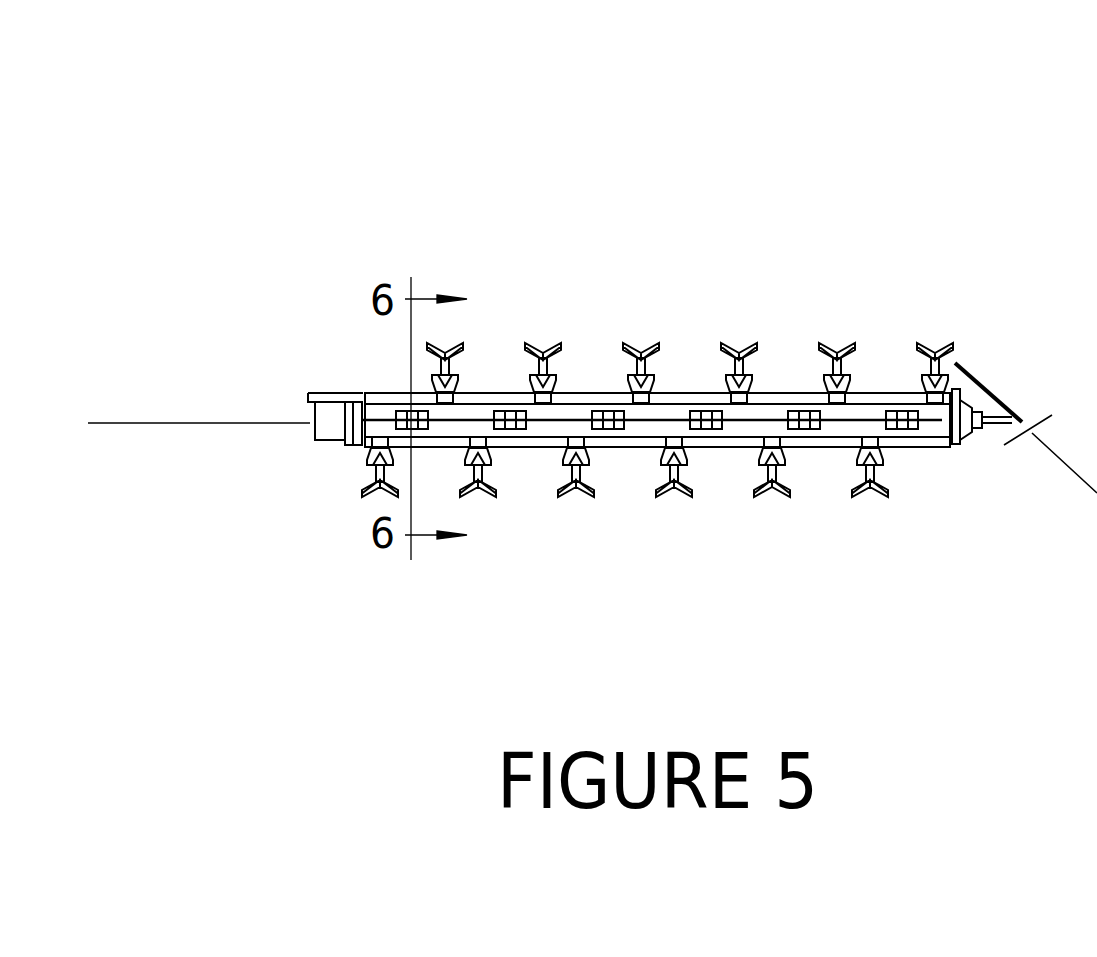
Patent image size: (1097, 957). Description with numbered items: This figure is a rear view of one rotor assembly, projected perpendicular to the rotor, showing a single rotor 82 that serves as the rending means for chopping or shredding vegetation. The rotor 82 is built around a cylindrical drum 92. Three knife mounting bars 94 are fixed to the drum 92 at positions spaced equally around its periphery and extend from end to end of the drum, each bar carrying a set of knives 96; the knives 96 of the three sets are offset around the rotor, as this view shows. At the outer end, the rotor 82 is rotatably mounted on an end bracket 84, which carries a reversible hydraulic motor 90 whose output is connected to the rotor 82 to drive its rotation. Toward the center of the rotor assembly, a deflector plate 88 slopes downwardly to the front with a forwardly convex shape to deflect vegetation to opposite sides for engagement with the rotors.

The rotor 82 is at (643, 240).
The bracket 84 is at (331, 300).
The deflector plate 88 is at (968, 300).
The reversible hydraulic motor 90 is at (318, 432).
The cylindrical drum 92 is at (647, 427).
The knife mounting bar 94 is at (683, 392).
The knife 96 is at (487, 492).